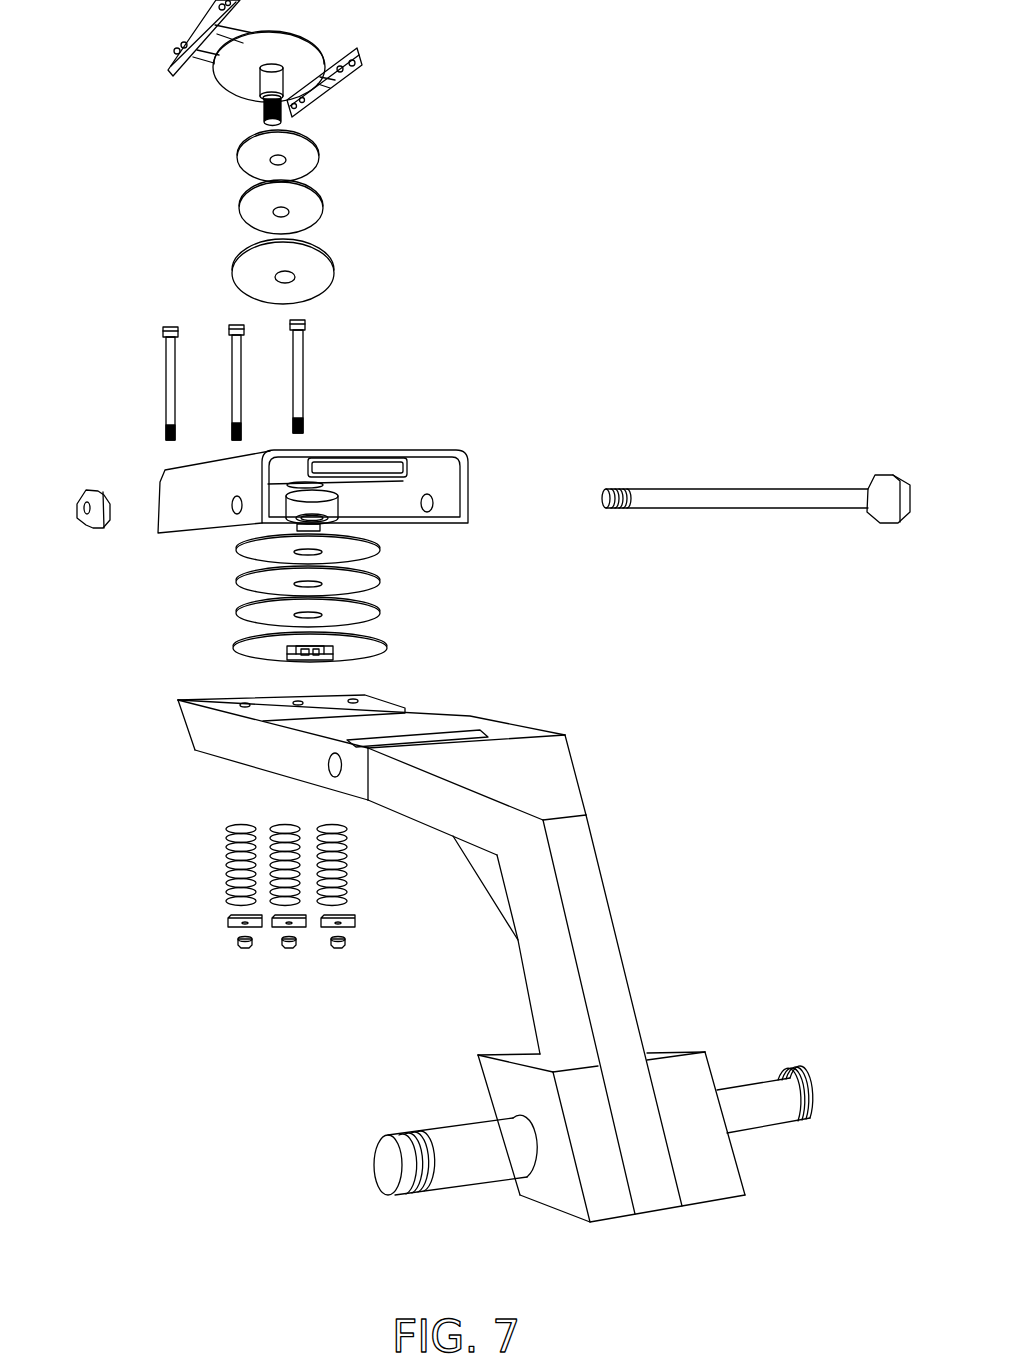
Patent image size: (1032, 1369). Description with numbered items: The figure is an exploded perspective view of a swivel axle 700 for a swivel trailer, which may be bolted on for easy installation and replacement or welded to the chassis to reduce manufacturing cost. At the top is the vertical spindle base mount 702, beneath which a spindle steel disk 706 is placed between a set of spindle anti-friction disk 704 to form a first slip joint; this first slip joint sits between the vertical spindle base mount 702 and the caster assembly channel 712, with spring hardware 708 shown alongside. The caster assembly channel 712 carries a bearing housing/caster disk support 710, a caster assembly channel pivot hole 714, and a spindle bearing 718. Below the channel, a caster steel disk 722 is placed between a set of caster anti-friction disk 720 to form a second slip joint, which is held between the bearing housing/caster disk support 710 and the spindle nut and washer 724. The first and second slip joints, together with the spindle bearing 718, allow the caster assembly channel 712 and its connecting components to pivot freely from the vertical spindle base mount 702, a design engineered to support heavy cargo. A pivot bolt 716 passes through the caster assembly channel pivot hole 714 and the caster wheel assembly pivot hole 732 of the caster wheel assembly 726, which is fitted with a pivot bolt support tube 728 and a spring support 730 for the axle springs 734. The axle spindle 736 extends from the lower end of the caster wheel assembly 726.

The swivel axle 700 is at (111, 39).
The vertical spindle base mount 702 is at (362, 60).
The set of spindle anti-friction disk 704 is at (346, 217).
The spindle steel disk 706 is at (242, 208).
The spring hardware 708 is at (203, 302).
The bearing housing/caster disk support 710 is at (367, 470).
The caster assembly channel 712 is at (457, 452).
The caster assembly channel pivot hole 714 is at (233, 507).
The pivot bolt 716 is at (773, 488).
The spindle bearing 718 is at (330, 505).
The set of caster anti-friction disk 720 is at (424, 580).
The caster steel disk 722 is at (237, 580).
The spindle nut and washer 724 is at (233, 648).
The caster wheel assembly 726 is at (565, 735).
The pivot bolt support tube 728 is at (422, 727).
The spring support 730 is at (232, 692).
The caster wheel assembly pivot hole 732 is at (330, 765).
The axle springs 734 is at (233, 810).
The axle spindle 736 is at (440, 1129).